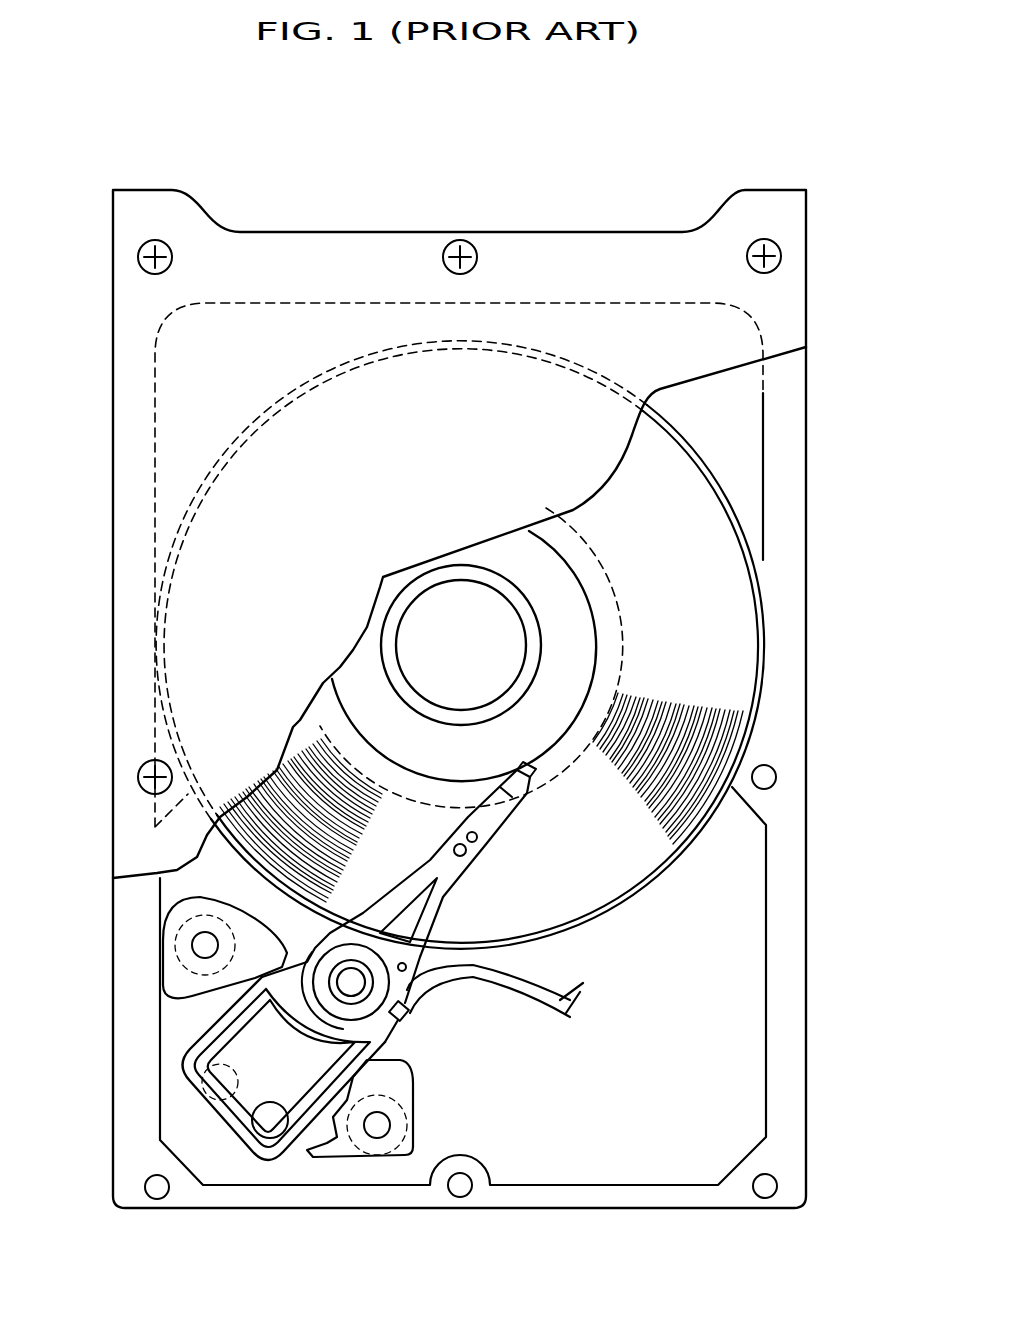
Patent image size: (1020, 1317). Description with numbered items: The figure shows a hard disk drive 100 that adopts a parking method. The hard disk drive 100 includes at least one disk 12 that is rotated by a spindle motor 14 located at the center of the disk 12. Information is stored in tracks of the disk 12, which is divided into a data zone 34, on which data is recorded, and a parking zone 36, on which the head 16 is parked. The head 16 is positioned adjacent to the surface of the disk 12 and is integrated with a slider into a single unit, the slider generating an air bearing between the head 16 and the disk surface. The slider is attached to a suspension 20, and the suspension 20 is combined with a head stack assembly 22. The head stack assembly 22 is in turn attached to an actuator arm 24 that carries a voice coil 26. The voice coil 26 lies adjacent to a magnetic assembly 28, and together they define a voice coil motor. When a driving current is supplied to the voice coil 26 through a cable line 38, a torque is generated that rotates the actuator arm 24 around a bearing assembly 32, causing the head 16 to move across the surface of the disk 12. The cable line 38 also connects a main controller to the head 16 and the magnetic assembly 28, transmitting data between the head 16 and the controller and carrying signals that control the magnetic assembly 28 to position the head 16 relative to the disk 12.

The hard disk drive 100 is at (600, 146).
The disk 12 is at (715, 577).
The spindle motor 14 is at (435, 622).
The head 16 is at (535, 779).
The suspension 20 is at (508, 795).
The head stack assembly 22 is at (440, 895).
The actuator arm 24 is at (263, 1003).
The voice coil 26 is at (183, 1070).
The magnetic assembly 28 is at (200, 1013).
The bearing assembly 32 is at (367, 993).
The data zone 34 is at (277, 803).
The parking zone 36 is at (612, 632).
The cable line 38 is at (528, 978).